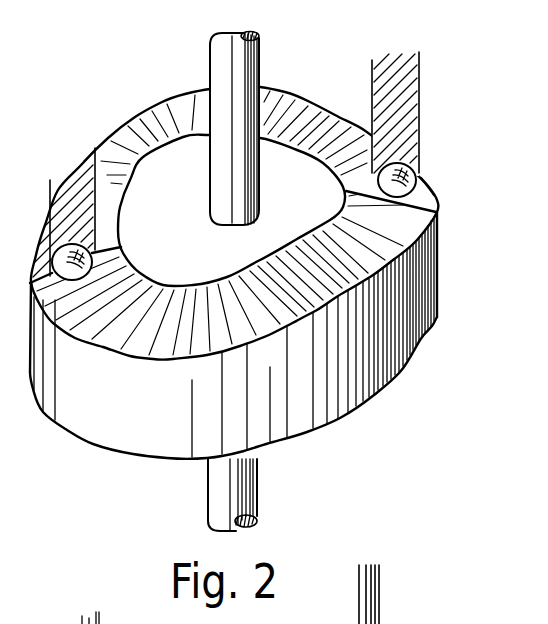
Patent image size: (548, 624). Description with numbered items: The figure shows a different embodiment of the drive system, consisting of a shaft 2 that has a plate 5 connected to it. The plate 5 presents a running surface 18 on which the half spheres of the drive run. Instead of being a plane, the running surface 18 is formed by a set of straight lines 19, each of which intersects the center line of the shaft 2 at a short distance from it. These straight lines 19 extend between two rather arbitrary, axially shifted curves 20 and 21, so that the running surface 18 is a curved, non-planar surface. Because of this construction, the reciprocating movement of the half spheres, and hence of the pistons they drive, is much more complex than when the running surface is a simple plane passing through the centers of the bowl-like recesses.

The shaft 2 is at (242, 75).
The plate 5 is at (359, 370).
The running surface 18 is at (321, 264).
The straight lines 19 is at (93, 247).
The axially shifted curve 20 is at (289, 318).
The axially shifted curve 21 is at (216, 280).